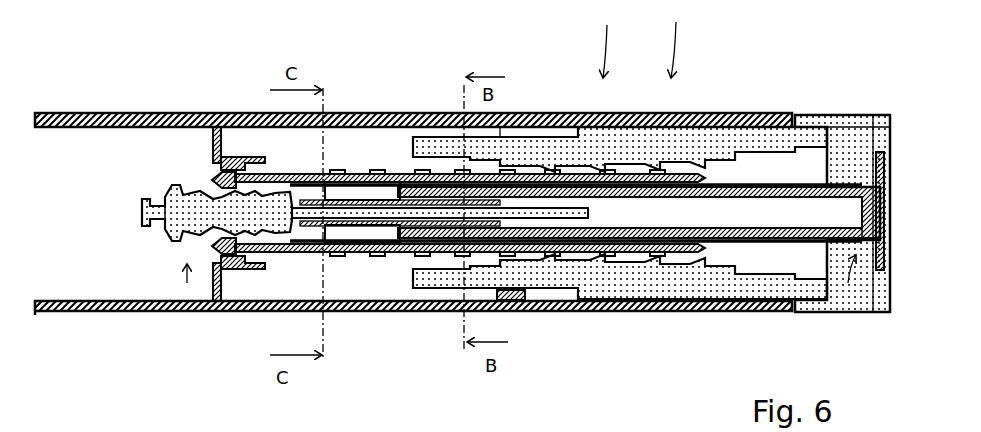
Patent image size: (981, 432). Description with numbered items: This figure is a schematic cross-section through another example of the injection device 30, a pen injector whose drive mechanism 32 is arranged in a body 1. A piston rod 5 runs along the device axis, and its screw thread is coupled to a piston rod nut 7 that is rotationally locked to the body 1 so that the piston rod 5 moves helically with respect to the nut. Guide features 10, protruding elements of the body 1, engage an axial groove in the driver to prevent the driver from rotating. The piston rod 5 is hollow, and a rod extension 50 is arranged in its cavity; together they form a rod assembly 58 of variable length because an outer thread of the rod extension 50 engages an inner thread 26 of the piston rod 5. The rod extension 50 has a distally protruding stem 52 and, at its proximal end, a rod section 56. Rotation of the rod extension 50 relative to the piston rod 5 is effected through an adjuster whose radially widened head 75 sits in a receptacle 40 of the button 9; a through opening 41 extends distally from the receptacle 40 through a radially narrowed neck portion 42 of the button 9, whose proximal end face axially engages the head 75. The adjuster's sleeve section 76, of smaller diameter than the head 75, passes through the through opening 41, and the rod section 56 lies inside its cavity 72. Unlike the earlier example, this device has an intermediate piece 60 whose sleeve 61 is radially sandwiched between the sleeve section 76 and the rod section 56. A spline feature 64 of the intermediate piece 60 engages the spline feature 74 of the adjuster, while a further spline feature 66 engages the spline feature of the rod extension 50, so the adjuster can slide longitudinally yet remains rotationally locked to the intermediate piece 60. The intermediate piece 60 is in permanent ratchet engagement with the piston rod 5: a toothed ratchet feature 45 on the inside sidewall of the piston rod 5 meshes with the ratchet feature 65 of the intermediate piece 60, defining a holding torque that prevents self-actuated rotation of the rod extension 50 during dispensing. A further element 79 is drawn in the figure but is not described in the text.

The body 1 is at (560, 113).
The piston rod 5 is at (437, 113).
The piston rod nut 7 is at (243, 168).
The button 9 is at (815, 113).
The guide features 10 is at (517, 315).
The inner thread 26 is at (236, 315).
The injection device 30 is at (609, 39).
The drive mechanism 32 is at (678, 39).
The receptacle 40 is at (873, 113).
The through opening 41 is at (830, 305).
The neck portion 42 is at (858, 113).
The ratchet feature 45 is at (343, 113).
The rod extension 50 is at (198, 200).
The stem 52 is at (163, 200).
The rod section 56 is at (558, 315).
The rod assembly 58 is at (181, 315).
The intermediate piece 60 is at (391, 315).
The sleeve 61 is at (372, 113).
The spline feature 64 is at (409, 113).
The ratchet feature 65 is at (332, 315).
The further spline feature 66 is at (357, 315).
The cavity 72 is at (636, 113).
The spline feature 74 is at (531, 113).
The radially widened head 75 is at (893, 213).
The sleeve section 76 is at (618, 315).
The return passage 79 is at (868, 303).